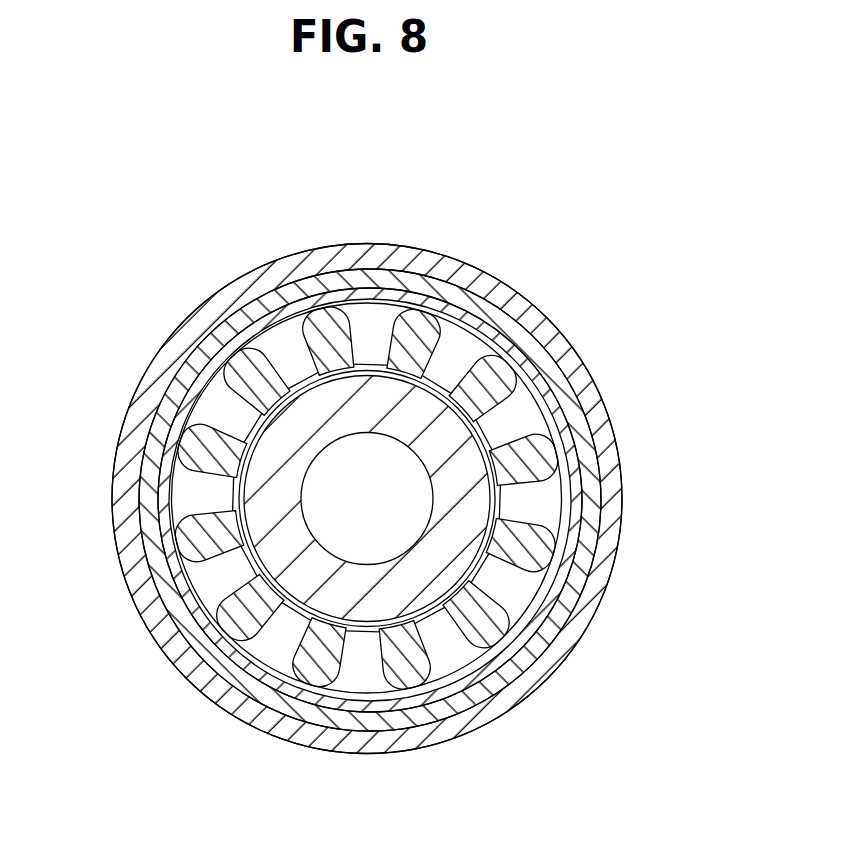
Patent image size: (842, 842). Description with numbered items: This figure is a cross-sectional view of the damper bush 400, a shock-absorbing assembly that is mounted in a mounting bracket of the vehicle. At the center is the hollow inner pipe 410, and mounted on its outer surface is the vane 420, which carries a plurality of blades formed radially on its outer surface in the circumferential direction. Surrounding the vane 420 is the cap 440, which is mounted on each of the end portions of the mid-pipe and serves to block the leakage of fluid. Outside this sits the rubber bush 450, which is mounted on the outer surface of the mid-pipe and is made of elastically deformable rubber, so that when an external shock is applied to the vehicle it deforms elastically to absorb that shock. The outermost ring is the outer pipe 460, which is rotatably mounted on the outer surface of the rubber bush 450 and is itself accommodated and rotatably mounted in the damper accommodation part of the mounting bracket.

The damper bush 400 is at (665, 142).
The inner pipe 410 is at (470, 426).
The vane 420 is at (413, 335).
The cap 440 is at (173, 597).
The rubber bush 450 is at (166, 412).
The outer pipe 460 is at (198, 308).